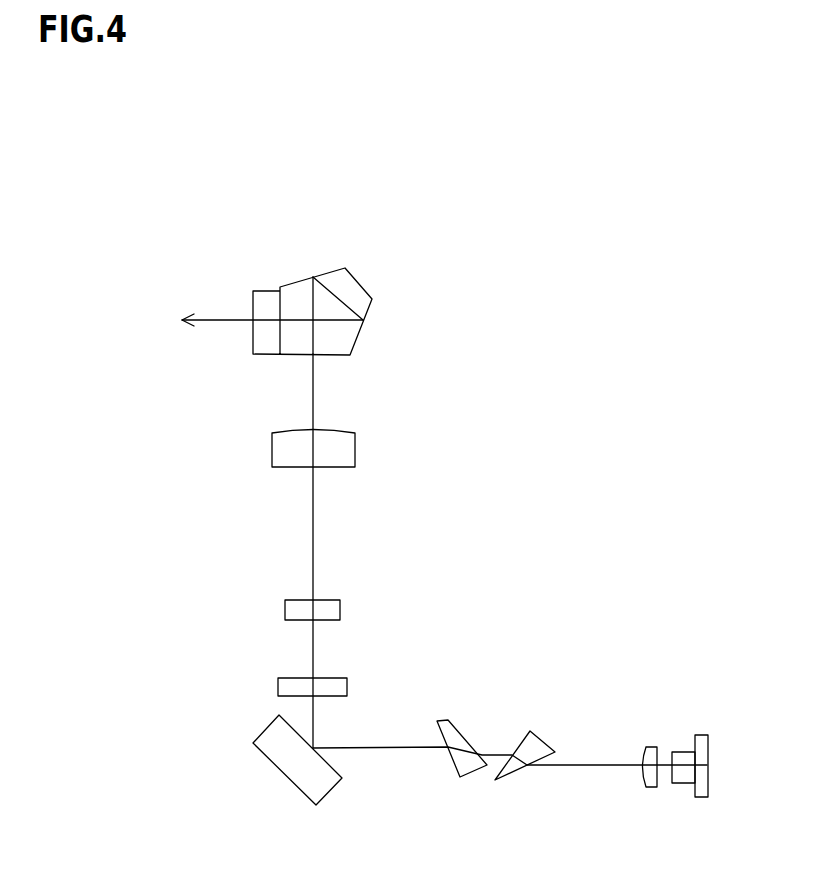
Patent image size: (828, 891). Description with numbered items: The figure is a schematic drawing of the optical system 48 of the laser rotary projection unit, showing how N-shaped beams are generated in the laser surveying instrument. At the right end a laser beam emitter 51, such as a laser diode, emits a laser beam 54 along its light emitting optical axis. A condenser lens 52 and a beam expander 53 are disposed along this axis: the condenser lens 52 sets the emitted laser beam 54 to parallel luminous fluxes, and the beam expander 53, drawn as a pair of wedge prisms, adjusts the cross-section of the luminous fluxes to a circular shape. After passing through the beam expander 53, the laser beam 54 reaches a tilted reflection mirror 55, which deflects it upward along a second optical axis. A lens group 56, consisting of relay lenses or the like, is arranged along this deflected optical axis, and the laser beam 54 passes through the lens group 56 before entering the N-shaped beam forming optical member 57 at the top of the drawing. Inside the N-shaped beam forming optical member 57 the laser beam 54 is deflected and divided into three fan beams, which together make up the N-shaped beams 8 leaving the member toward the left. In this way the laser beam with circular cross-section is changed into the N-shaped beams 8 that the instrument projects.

The N-shaped beams 8 is at (223, 317).
The optical system 48 is at (554, 452).
The laser beam emitter 51 is at (680, 747).
The condenser lens 52 is at (647, 745).
The beam expander 53 is at (490, 712).
The laser beam 54 is at (573, 766).
The reflection mirror 55 is at (287, 780).
The lens group 56 is at (367, 690).
The N-shaped beam forming optical member 57 is at (332, 268).